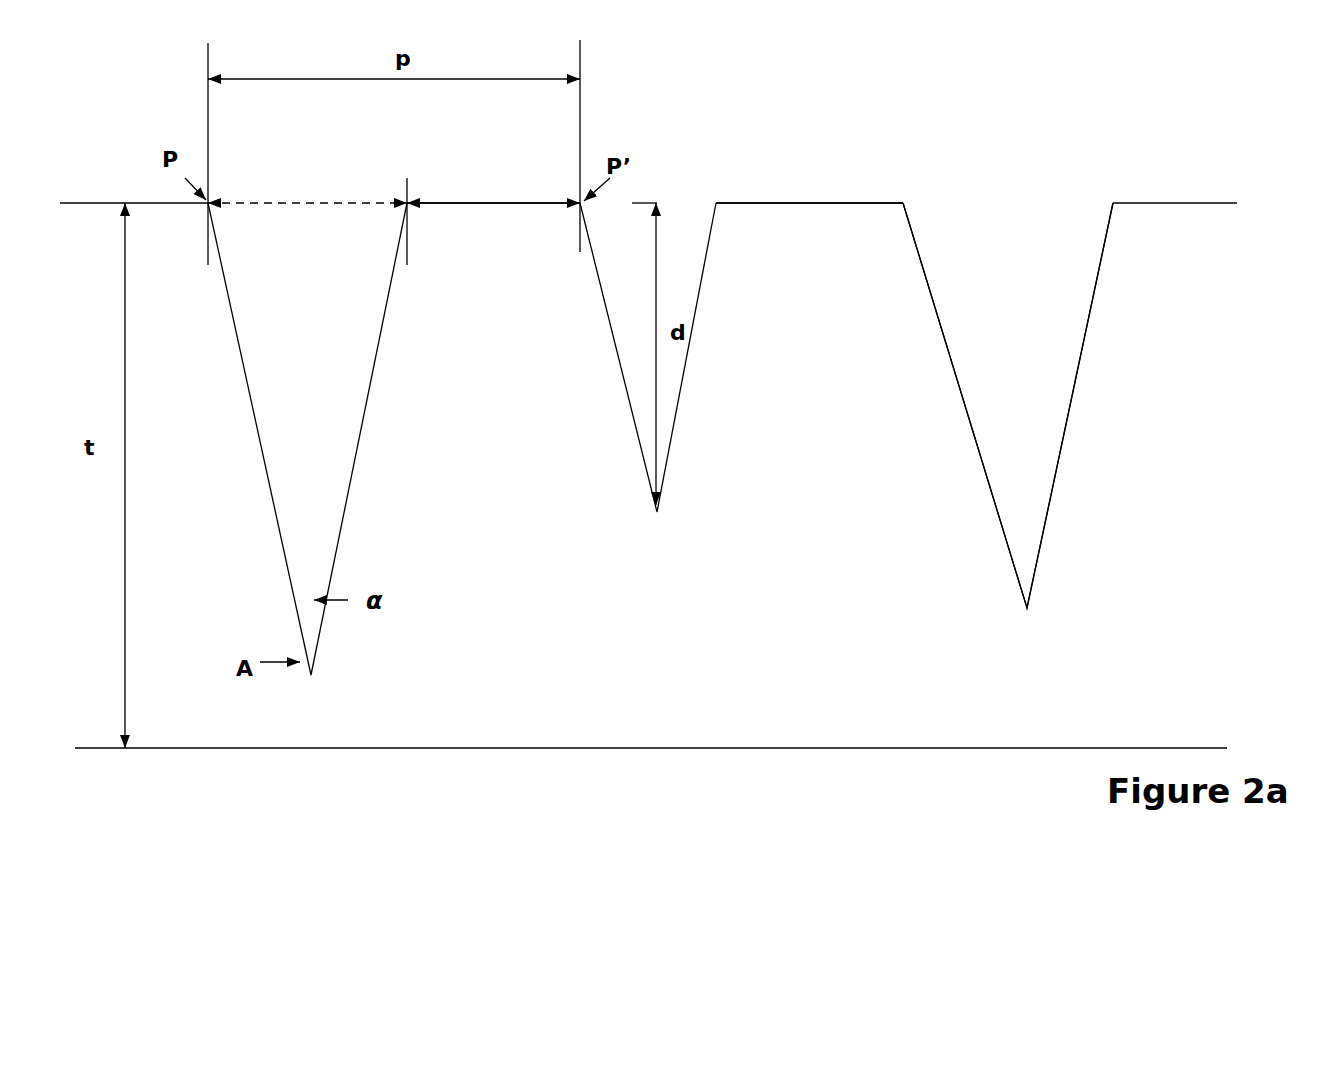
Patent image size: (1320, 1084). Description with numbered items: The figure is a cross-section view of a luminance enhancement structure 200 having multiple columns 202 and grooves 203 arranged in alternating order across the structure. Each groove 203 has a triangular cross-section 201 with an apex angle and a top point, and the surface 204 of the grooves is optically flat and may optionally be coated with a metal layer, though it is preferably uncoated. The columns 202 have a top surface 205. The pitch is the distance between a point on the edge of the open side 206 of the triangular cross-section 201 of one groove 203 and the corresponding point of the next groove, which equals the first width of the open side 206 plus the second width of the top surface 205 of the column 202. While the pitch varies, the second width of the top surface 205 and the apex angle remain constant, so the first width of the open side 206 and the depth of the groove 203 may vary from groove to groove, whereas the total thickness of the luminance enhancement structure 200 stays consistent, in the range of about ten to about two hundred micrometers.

The luminance enhancement structure 200 is at (1190, 413).
The triangular cross-section 201 is at (348, 378).
The column 202 is at (803, 262).
The groove 203 is at (1013, 250).
The surface of the grooves 204 is at (1074, 361).
The top surface 205 is at (502, 200).
The open side 206 is at (297, 200).